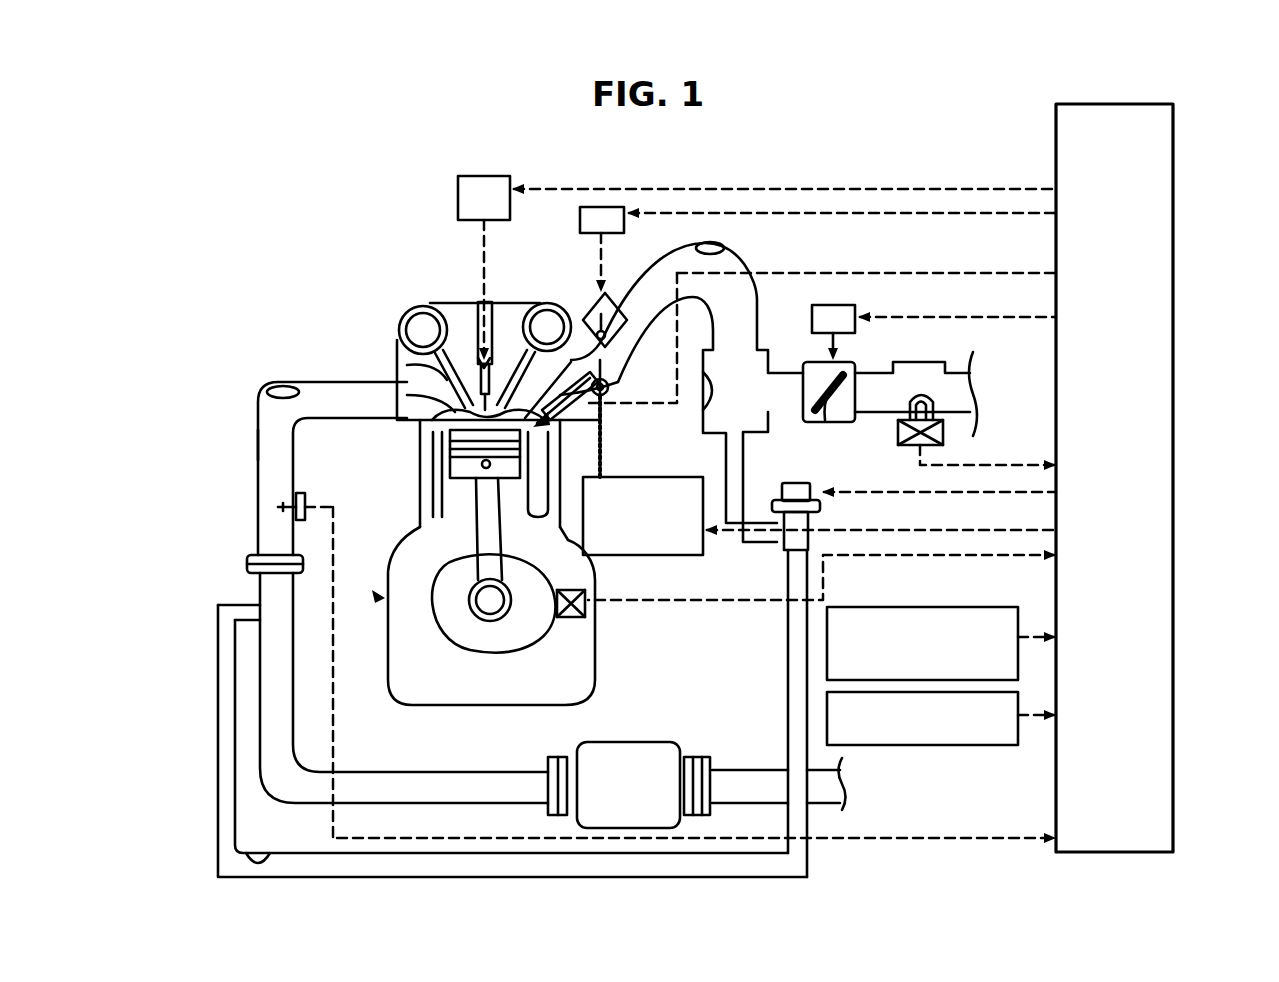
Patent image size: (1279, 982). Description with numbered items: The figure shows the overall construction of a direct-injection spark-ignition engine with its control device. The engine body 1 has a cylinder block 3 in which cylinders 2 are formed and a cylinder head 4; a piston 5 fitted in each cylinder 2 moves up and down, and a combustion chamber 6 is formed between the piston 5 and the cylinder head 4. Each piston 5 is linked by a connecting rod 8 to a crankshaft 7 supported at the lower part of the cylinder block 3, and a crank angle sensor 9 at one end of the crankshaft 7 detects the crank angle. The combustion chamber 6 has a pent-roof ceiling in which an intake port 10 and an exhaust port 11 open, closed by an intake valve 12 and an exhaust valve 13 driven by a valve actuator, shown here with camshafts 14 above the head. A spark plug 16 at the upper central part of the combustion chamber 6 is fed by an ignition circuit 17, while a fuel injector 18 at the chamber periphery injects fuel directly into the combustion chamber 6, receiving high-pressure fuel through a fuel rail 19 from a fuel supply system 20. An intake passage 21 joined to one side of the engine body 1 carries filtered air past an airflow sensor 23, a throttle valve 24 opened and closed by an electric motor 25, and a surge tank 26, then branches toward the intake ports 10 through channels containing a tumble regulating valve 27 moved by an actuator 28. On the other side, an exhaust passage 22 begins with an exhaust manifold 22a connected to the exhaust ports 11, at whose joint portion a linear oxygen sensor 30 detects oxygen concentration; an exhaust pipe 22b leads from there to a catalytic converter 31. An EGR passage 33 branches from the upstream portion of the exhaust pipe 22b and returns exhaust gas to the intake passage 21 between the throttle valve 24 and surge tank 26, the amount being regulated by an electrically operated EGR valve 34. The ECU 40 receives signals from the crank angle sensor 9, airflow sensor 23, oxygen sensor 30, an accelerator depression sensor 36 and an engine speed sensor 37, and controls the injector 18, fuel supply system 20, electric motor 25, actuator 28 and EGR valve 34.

The engine body 1 is at (140, 572).
The cylinder 2 is at (512, 523).
The cylinder block 3 is at (416, 514).
The cylinder head 4 is at (406, 422).
The piston 5 is at (422, 472).
The combustion chamber 6 is at (424, 451).
The crankshaft 7 is at (462, 605).
The connecting rod 8 is at (392, 555).
The crank angle sensor 9 is at (575, 620).
The intake port 10 is at (588, 375).
The exhaust port 11 is at (405, 398).
The intake valve 12 is at (579, 300).
The exhaust valve 13 is at (404, 364).
The camshaft 14 is at (398, 329).
The spark plug 16 is at (460, 300).
The ignition circuit 17 is at (458, 195).
The fuel injector 18 is at (567, 420).
The fuel rail 19 is at (612, 388).
The fuel supply system 20 is at (617, 477).
The intake passage 21 is at (724, 245).
The exhaust passage 22 is at (262, 388).
The exhaust manifold 22a is at (256, 441).
The exhaust pipe 22b is at (362, 770).
The airflow sensor 23 is at (943, 440).
The throttle valve 24 is at (824, 424).
The electric motor 25 is at (838, 305).
The surge tank 26 is at (700, 417).
The tumble regulating valve 27 is at (608, 288).
The actuator 28 is at (580, 223).
The linear O2 sensor 30 is at (304, 499).
The catalytic converter 31 is at (650, 742).
The EGR passage 33 is at (268, 860).
The EGR valve 34 is at (780, 547).
The accelerator depression sensor 36 is at (935, 607).
The engine speed sensor 37 is at (937, 745).
The ECU 40 is at (1159, 478).